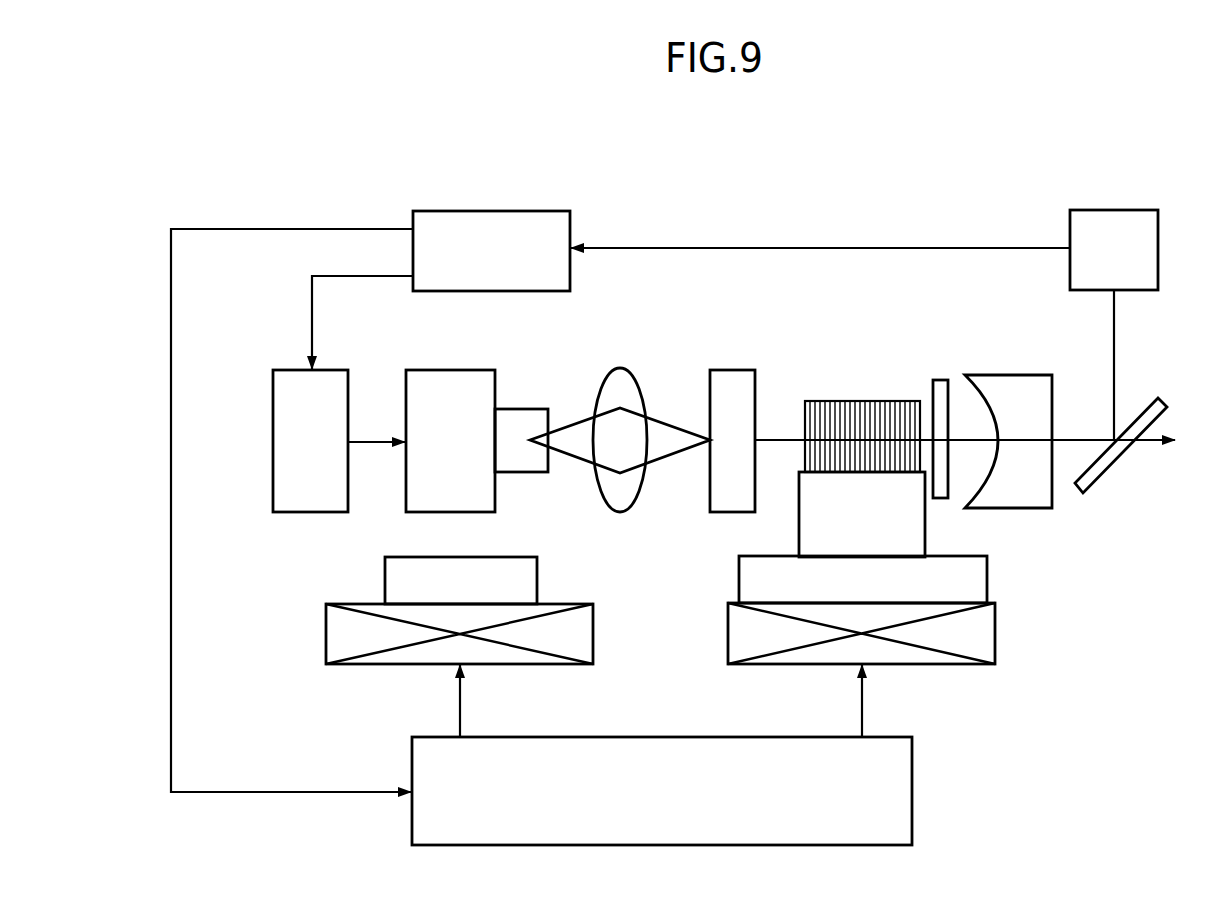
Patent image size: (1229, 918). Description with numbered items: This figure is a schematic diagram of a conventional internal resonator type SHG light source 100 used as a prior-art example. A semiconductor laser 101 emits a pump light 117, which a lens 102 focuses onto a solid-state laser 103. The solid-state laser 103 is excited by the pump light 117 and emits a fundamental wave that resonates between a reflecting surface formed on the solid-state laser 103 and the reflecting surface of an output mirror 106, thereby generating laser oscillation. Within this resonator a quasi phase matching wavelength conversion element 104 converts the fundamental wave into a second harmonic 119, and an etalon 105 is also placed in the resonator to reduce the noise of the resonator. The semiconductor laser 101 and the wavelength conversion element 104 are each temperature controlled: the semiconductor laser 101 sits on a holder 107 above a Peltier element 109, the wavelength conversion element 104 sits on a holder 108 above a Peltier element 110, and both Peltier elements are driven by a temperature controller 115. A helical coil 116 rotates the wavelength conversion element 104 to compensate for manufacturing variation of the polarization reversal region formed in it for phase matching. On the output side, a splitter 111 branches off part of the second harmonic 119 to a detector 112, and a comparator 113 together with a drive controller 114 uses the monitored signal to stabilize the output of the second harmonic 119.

The internal resonator type SHG light source 100 is at (668, 183).
The semiconductor laser 101 is at (446, 370).
The lens 102 is at (625, 369).
The solid-state laser 103 is at (730, 370).
The quasi phase matching wavelength conversion element 104 is at (855, 401).
The etalon 105 is at (940, 380).
The output mirror 106 is at (1017, 375).
The holder 107 is at (385, 573).
The holder 108 is at (988, 571).
The Peltier element 109 is at (326, 633).
The Peltier element 110 is at (997, 630).
The splitter 111 is at (1105, 477).
The detector 112 is at (1113, 210).
The comparator 113 is at (497, 211).
The drive controller 114 is at (273, 442).
The temperature controller 115 is at (913, 788).
The helical coil 116 is at (926, 533).
The pump light 117 is at (570, 457).
The second harmonic 119 is at (1160, 437).